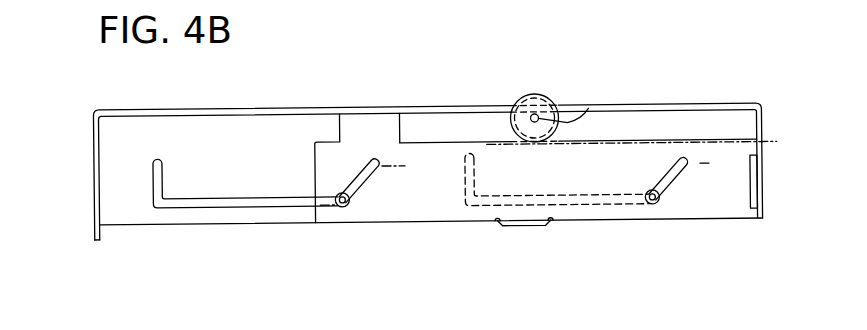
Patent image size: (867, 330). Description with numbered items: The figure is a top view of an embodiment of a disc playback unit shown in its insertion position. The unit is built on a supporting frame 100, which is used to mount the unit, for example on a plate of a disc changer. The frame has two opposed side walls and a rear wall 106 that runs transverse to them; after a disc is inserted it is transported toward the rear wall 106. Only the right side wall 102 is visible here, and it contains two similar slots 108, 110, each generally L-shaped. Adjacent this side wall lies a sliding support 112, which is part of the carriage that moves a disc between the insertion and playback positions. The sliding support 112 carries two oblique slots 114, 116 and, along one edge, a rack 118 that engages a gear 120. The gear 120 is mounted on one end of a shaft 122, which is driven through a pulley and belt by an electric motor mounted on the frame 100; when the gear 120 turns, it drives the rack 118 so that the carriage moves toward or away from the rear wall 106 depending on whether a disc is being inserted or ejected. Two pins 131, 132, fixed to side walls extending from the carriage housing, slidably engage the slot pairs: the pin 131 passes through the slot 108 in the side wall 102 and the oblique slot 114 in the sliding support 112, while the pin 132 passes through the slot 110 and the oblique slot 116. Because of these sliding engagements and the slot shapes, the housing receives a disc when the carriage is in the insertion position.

The supporting frame 100 is at (373, 100).
The side wall 102 is at (133, 197).
The rear wall 106 is at (94, 168).
The slot 108 is at (218, 205).
The slot 110 is at (591, 207).
The sliding support 112 is at (437, 193).
The oblique slot 114 is at (353, 183).
The oblique slot 116 is at (674, 176).
The rack 118 is at (622, 144).
The gear 120 is at (544, 96).
The shaft 122 is at (589, 110).
The pin 131 is at (336, 204).
The pin 132 is at (652, 207).